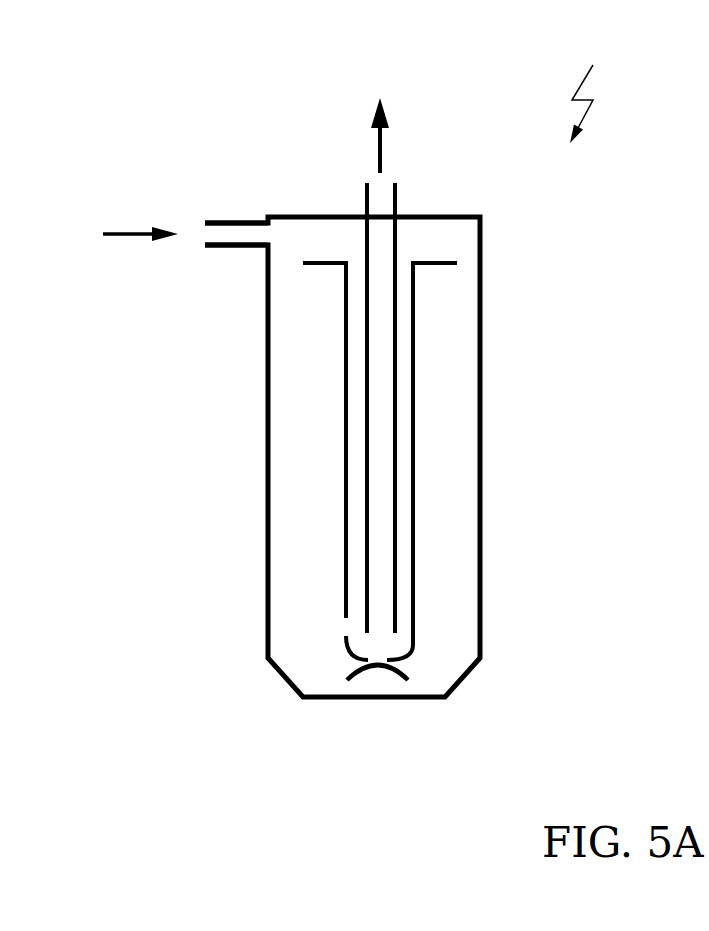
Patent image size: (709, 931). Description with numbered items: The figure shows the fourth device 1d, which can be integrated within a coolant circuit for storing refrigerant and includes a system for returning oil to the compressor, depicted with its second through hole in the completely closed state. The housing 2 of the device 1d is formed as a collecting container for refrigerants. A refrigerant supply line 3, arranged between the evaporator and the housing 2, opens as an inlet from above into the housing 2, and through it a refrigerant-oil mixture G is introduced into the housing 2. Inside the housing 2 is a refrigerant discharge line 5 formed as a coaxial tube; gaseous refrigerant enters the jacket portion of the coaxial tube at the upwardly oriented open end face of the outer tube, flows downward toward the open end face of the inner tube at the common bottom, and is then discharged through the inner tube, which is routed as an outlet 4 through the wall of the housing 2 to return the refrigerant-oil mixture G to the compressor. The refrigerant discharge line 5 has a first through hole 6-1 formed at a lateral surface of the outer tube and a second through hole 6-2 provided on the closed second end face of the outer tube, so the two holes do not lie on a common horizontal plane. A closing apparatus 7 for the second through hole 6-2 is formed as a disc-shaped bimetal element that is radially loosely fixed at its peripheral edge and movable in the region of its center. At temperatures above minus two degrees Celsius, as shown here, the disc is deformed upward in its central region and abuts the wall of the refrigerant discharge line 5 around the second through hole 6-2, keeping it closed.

The fourth device 1d is at (594, 90).
The housing 2 is at (483, 240).
The refrigerant supply line 3 is at (223, 222).
The outlet 4 is at (397, 192).
The refrigerant discharge line 5 is at (371, 482).
The first through hole 6-1 is at (343, 623).
The second through hole 6-2 is at (378, 658).
The closing apparatus 7 is at (390, 668).
The refrigerant-oil mixture G is at (162, 227).